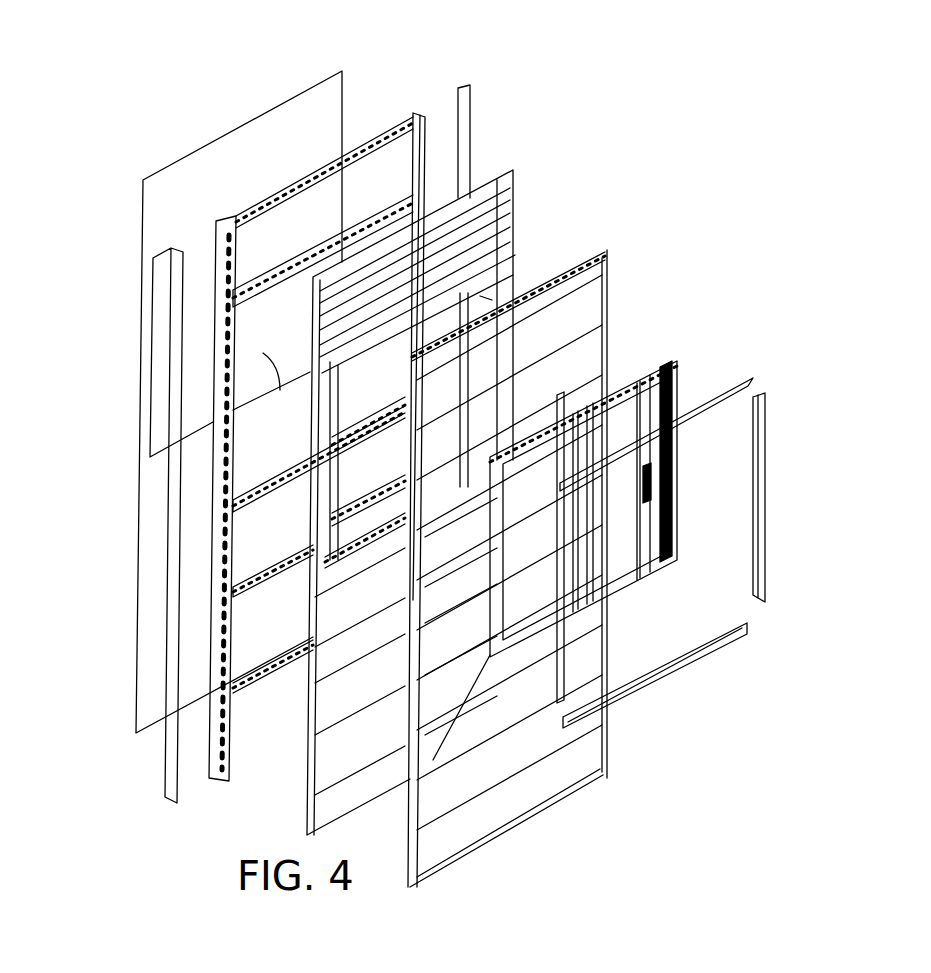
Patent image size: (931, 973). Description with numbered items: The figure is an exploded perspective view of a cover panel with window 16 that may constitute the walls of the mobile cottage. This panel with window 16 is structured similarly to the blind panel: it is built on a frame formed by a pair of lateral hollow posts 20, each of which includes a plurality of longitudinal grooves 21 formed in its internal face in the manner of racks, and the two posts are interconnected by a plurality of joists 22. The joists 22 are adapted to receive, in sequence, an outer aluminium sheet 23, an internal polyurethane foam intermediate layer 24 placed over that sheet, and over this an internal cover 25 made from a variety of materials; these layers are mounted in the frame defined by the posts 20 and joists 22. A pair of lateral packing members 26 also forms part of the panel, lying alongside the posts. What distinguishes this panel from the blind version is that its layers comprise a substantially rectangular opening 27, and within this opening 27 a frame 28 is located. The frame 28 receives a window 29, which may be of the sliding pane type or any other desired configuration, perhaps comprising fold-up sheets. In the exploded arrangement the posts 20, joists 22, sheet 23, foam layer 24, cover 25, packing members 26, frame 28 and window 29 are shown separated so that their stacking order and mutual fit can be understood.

The panel with window 16 is at (640, 237).
The lateral hollow post 20 is at (218, 242).
The longitudinal groove 21 is at (227, 538).
The joist 22 is at (257, 580).
The outer aluminium sheet 23 is at (210, 177).
The polyurethane foam intermediate layer 24 is at (517, 203).
The internal cover 25 is at (500, 783).
The lateral packing member 26 is at (177, 363).
The rectangular opening 27 is at (240, 410).
The frame 28 is at (750, 627).
The window 29 is at (677, 377).